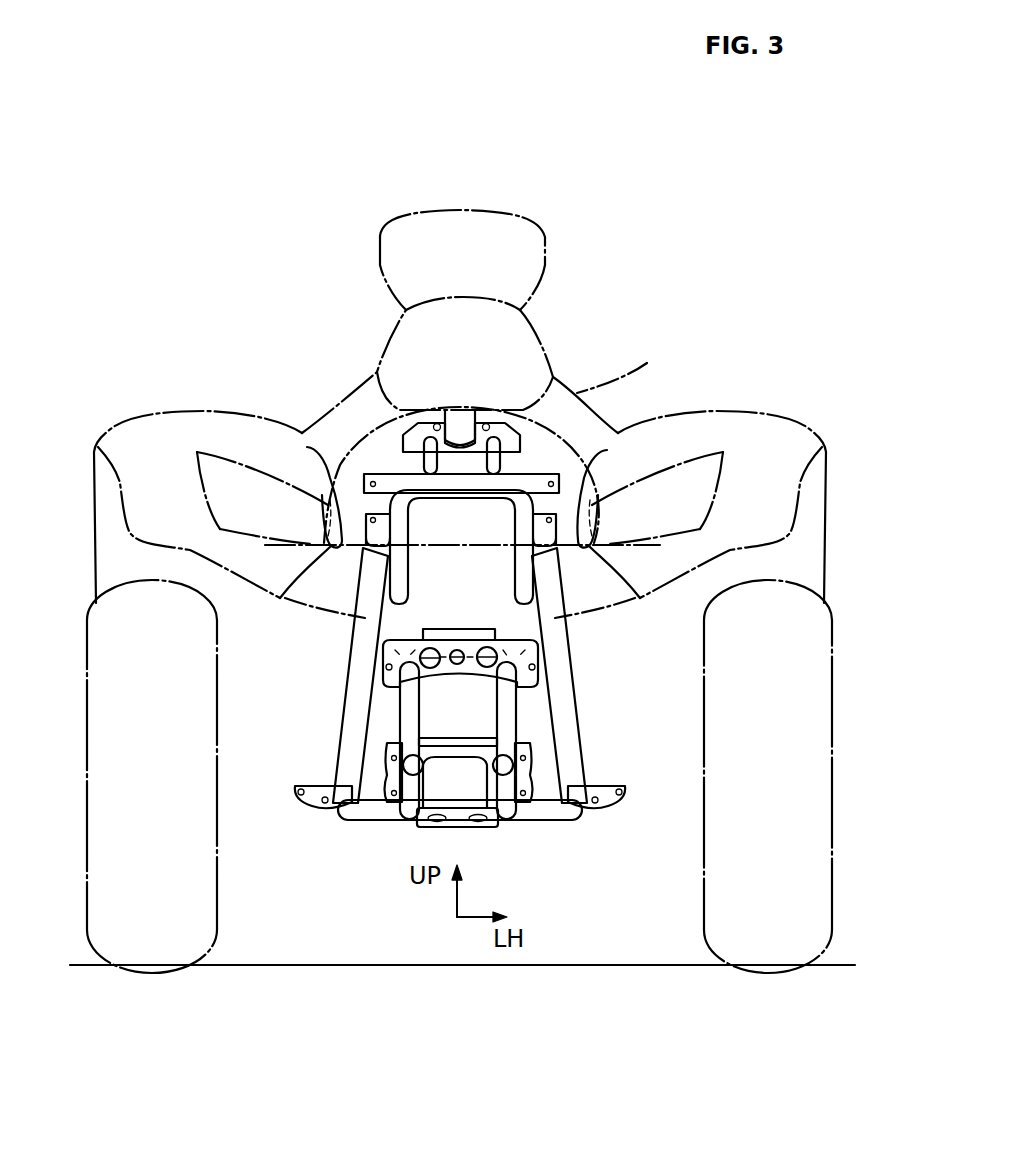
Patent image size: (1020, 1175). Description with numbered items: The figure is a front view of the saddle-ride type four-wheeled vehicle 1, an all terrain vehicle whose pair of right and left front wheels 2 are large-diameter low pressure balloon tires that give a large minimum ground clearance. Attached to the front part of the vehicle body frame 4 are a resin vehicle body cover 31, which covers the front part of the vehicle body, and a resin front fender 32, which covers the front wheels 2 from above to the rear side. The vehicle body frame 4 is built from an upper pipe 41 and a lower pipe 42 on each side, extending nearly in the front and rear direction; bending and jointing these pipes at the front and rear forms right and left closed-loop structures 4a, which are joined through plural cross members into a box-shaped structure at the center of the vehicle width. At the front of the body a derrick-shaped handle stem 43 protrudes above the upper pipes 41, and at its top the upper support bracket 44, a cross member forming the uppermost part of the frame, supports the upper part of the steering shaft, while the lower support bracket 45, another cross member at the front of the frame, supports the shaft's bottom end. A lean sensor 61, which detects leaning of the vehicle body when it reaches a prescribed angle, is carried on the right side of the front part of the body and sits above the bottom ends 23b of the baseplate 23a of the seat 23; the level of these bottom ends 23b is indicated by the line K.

The saddle-ride type four-wheeled vehicle 1 is at (622, 213).
The front wheels 2 is at (88, 642).
The vehicle body frame 4 is at (460, 687).
The closed-loop structures 4a is at (340, 686).
The seat 23 is at (647, 363).
The baseplate 23a is at (575, 552).
The bottom ends 23b is at (294, 580).
The vehicle body cover 31 is at (533, 328).
The front fender 32 is at (175, 413).
The upper pipe 41 is at (400, 731).
The lower pipe 42 is at (368, 830).
The handle stem 43 is at (391, 473).
The upper support bracket 44 is at (447, 418).
The lower support bracket 45 is at (459, 631).
The lean sensor 61 is at (307, 447).
The line K is at (659, 527).